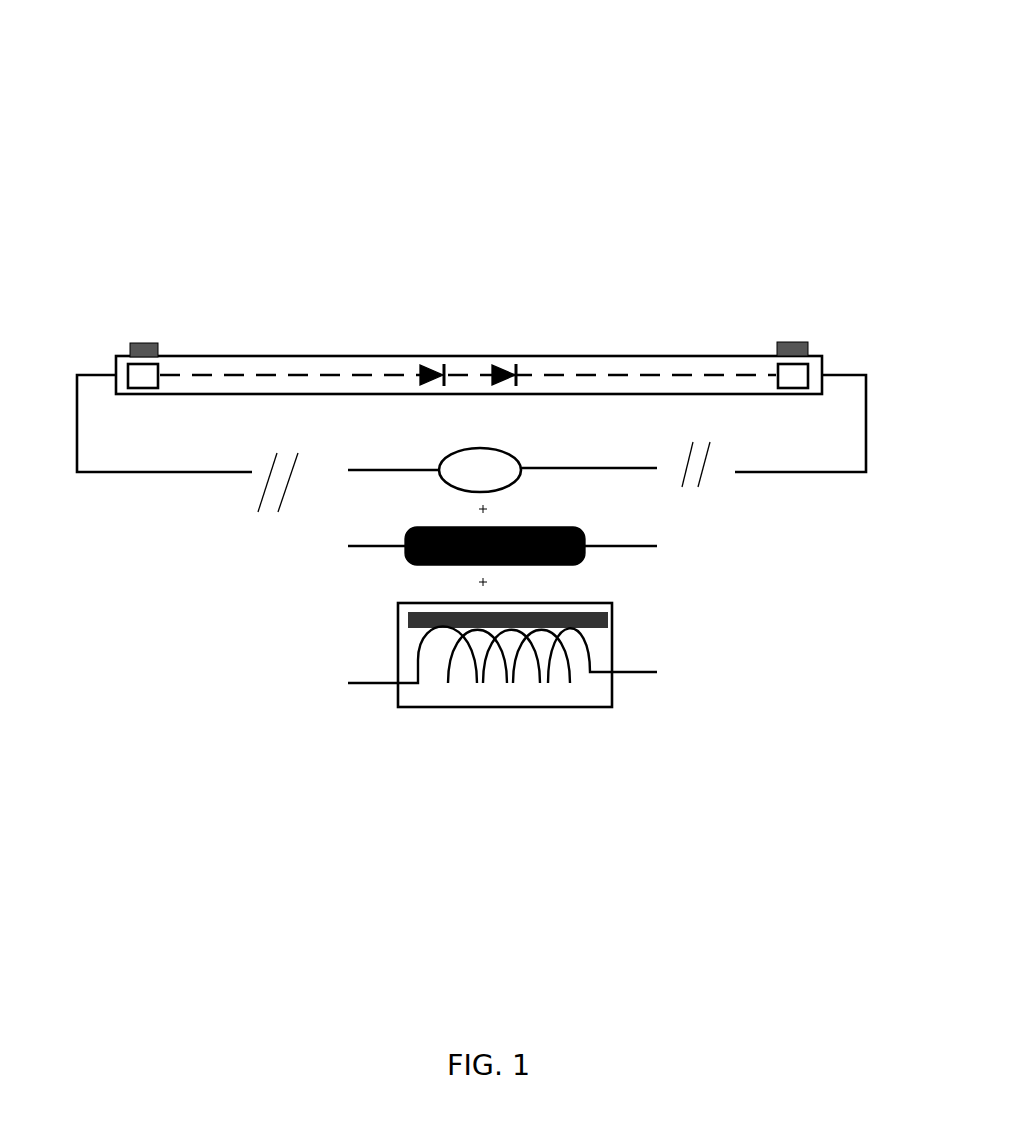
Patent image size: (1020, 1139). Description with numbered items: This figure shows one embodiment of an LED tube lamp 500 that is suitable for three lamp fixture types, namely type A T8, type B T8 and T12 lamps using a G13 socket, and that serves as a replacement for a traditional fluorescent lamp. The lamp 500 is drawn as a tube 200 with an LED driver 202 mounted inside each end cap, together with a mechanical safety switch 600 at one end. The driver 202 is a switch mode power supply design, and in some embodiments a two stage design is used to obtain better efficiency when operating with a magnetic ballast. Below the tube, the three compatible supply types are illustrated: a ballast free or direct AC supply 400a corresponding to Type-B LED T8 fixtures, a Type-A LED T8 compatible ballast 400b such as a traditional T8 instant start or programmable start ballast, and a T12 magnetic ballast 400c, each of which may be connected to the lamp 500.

The LED tube lamp 500 is at (676, 59).
The tubular LED lamp 200 is at (647, 375).
The mechanical safety switch 600 is at (140, 343).
The LED driver 202 is at (140, 377).
The direct AC 400a is at (347, 472).
The Type-A LED T8 compatible ballast 400b is at (350, 548).
The T12 magnetic ballast 400c is at (362, 684).